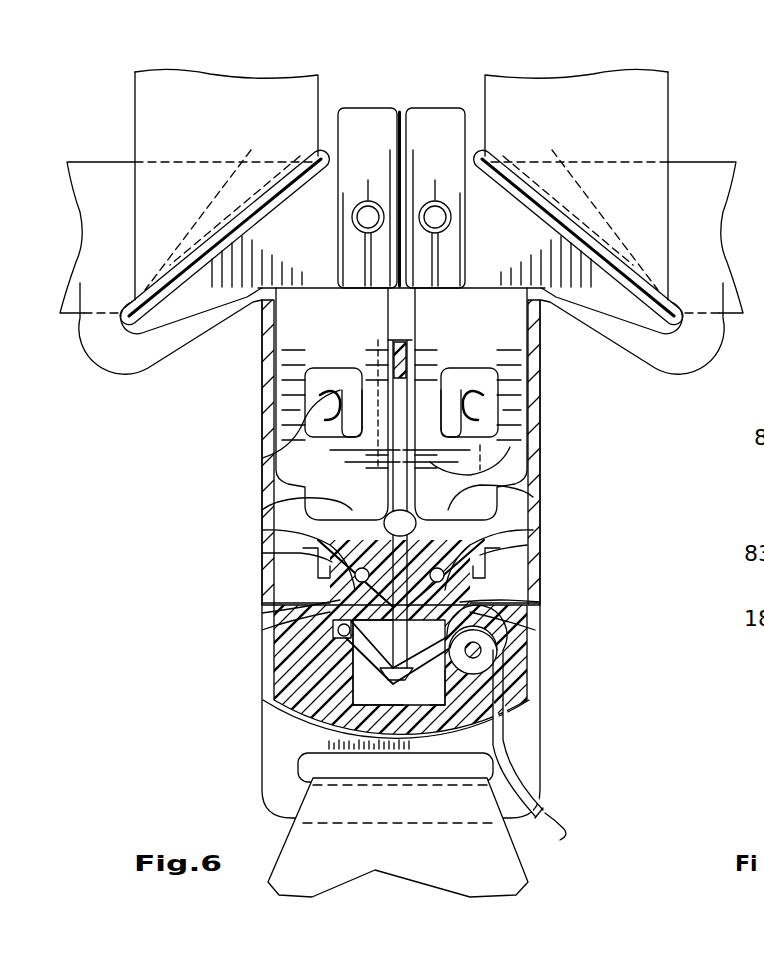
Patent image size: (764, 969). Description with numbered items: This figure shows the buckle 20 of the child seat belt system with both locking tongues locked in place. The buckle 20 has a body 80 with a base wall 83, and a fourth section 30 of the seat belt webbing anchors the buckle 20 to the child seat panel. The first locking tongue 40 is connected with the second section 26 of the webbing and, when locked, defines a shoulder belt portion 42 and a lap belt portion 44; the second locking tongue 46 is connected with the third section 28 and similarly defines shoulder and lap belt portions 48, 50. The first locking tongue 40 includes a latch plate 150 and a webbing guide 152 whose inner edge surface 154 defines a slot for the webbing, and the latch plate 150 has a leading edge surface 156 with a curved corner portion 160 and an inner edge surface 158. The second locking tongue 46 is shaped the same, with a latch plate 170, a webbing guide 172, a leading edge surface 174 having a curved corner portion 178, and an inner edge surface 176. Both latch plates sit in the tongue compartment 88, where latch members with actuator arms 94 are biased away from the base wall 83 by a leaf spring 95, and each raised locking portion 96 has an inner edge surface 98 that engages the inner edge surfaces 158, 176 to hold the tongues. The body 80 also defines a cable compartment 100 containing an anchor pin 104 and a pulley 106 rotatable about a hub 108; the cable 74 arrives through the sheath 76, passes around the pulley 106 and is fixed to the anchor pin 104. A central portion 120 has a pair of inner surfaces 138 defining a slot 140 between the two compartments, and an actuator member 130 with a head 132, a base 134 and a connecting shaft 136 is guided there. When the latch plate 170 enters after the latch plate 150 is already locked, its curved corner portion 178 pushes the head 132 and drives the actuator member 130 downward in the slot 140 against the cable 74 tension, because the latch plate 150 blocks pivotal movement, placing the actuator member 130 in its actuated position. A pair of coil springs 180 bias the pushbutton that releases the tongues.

The buckle 20 is at (255, 413).
The second section 26 is at (128, 90).
The third section 28 is at (677, 91).
The fourth section 30 is at (312, 858).
The first locking tongue 40 is at (379, 100).
The shoulder belt portion 42 is at (213, 105).
The lap belt portion 44 is at (103, 182).
The second locking tongue 46 is at (429, 100).
The shoulder belt portion 48 is at (597, 105).
The lap belt portion 50 is at (706, 182).
The cable 74 is at (562, 824).
The sheath 76 is at (512, 762).
The body 80 is at (268, 424).
The base wall 83 is at (260, 565).
The tongue compartment 88 is at (366, 319).
The actuator arm 94 is at (262, 600).
The leaf spring 95 is at (412, 380).
The raised locking portion 96 is at (318, 393).
The inner edge surface 98 is at (323, 432).
The cable compartment 100 is at (391, 662).
The anchor pin 104 is at (262, 676).
The pulley 106 is at (497, 652).
The hub 108 is at (505, 686).
The central portion 120 is at (262, 510).
The actuator member 130 is at (527, 542).
The head 132 is at (530, 465).
The base 134 is at (262, 695).
The shaft 136 is at (483, 560).
The inner surfaces 138 is at (262, 630).
The slot 140 is at (262, 572).
The latch plate 150 is at (278, 322).
The webbing guide 152 is at (135, 348).
The inner edge surface 154 is at (266, 219).
The leading edge surface 156 is at (262, 530).
The inner edge surface 158 is at (262, 458).
The curved corner portion 160 is at (262, 553).
The latch plate 170 is at (485, 312).
The webbing guide 172 is at (668, 348).
The leading edge surface 174 is at (533, 497).
The inner edge surface 176 is at (524, 393).
The curved corner portion 178 is at (533, 530).
The coil springs 180 is at (262, 613).